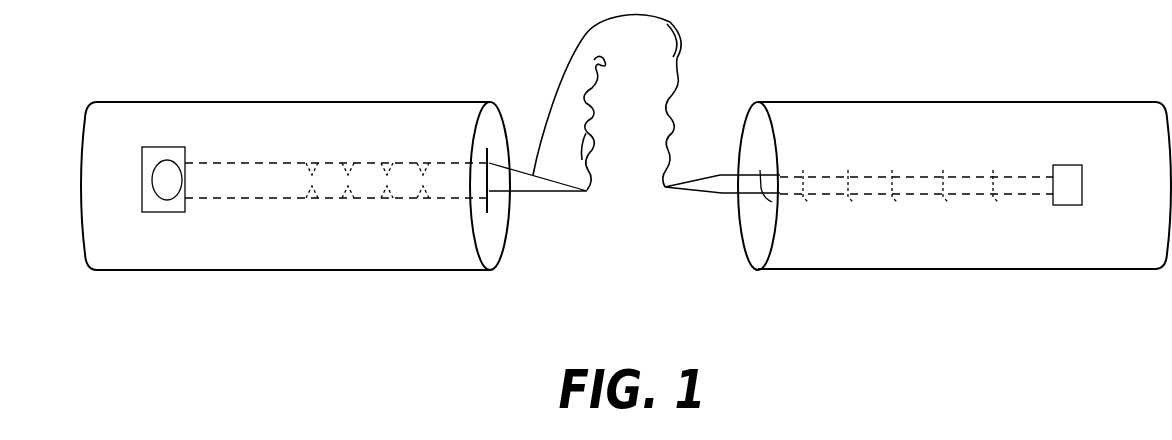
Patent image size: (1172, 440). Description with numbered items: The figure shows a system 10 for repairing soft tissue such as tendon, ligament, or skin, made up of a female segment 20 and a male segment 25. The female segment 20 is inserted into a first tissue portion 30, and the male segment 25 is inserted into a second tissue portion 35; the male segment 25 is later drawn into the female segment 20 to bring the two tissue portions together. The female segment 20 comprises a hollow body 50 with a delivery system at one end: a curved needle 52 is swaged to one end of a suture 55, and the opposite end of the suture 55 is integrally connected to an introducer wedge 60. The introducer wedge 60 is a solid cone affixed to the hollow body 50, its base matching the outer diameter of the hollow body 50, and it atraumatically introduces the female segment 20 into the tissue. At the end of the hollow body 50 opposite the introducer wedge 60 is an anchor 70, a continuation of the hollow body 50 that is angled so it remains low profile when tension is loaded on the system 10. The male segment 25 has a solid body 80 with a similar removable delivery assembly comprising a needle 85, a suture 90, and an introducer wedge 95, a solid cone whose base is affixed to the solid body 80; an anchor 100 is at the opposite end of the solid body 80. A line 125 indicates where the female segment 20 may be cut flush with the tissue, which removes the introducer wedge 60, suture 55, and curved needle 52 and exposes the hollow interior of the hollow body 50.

The system 10 is at (175, 331).
The female segment 20 is at (295, 135).
The male segment 25 is at (954, 152).
The first tissue portion 30 is at (400, 102).
The second tissue portion 35 is at (815, 102).
The hollow body 50 is at (270, 198).
The curved needle 52 is at (603, 78).
The suture 55 is at (598, 132).
The introducer wedge 60 is at (552, 193).
The anchor 70 is at (148, 147).
The solid body 80 is at (840, 195).
The needle 85 is at (690, 33).
The suture 90 is at (680, 78).
The introducer wedge 95 is at (708, 194).
The anchor 100 is at (1058, 165).
The line 125 is at (493, 195).